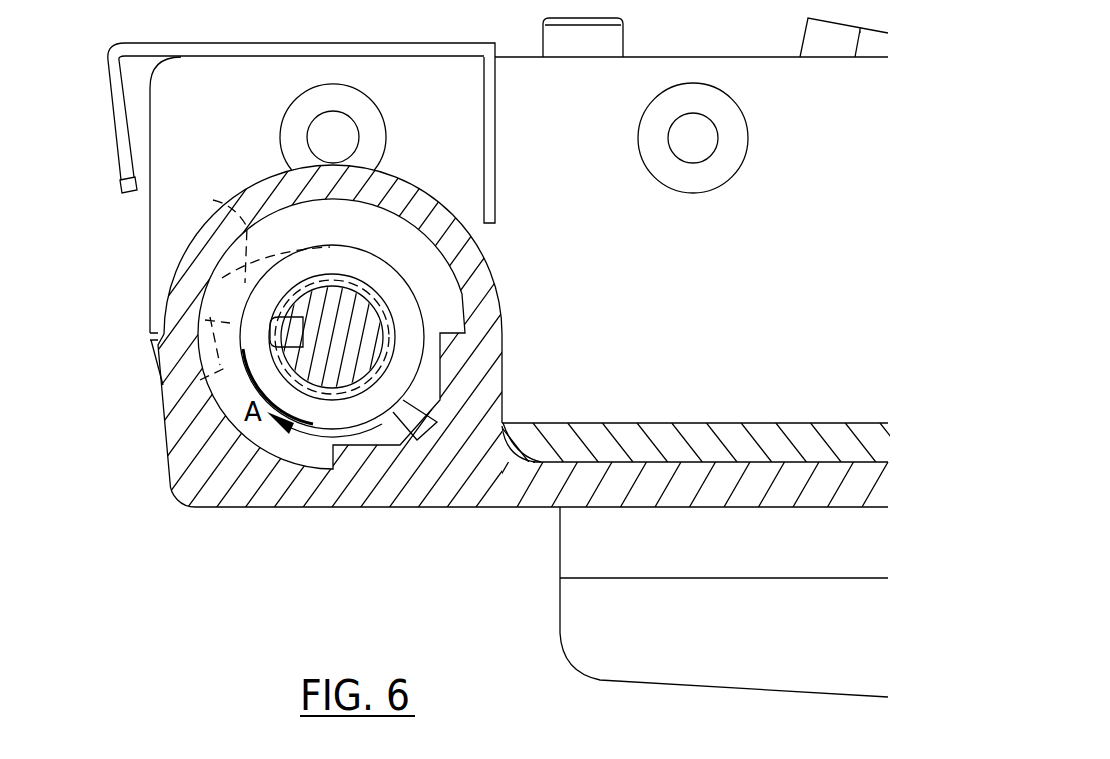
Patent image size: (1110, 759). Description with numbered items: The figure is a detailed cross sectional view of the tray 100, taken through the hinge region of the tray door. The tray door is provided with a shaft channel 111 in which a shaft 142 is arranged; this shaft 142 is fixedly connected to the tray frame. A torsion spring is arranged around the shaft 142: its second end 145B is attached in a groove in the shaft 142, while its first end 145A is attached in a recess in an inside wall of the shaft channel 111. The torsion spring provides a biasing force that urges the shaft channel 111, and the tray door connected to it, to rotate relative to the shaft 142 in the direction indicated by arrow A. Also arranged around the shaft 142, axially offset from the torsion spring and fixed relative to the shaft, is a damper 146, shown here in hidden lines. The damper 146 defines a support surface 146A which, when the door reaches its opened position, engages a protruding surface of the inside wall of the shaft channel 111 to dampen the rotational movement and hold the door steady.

The tray 100 is at (680, 485).
The shaft channel 111 is at (193, 268).
The shaft 142 is at (345, 320).
The first end of torsion spring 145A is at (420, 425).
The second end of torsion spring 145B is at (297, 330).
The damper 146 is at (213, 200).
The support surface 146A is at (200, 380).